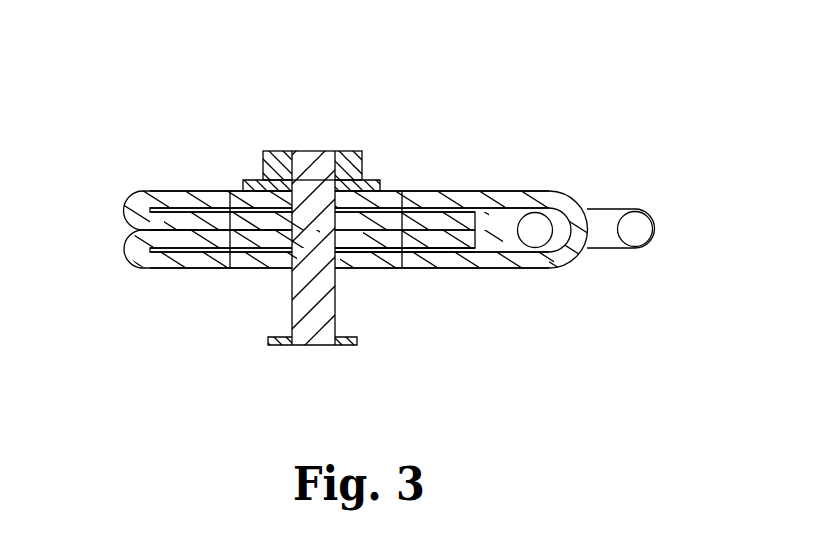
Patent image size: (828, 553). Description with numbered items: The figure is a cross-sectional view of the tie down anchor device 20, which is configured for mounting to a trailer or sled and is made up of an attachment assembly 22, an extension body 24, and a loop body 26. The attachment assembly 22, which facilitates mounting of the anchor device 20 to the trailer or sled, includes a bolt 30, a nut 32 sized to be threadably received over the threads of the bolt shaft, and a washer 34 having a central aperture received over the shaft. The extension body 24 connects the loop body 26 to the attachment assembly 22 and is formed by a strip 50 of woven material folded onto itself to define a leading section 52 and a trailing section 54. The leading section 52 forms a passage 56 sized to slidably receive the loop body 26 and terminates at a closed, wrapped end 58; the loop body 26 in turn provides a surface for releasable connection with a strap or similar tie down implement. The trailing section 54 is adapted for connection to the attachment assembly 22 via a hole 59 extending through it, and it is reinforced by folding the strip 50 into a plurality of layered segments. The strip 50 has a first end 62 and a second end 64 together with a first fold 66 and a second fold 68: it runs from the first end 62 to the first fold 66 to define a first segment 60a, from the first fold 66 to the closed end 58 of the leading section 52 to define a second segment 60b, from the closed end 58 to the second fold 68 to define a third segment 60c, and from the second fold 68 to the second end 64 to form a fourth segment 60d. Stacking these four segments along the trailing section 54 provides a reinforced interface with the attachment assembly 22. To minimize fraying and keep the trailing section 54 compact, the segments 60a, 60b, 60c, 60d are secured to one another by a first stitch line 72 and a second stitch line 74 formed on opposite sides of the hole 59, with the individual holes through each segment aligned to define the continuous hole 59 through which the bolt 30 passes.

The tie down anchor device 20 is at (357, 31).
The attachment assembly 22 is at (350, 133).
The extension body 24 is at (468, 178).
The loop body 26 is at (628, 192).
The bolt 30 is at (311, 320).
The nut 32 is at (273, 150).
The washer 34 is at (254, 190).
The strip 50 is at (503, 273).
The leading section 52 is at (541, 183).
The trailing section 54 is at (188, 184).
The passage 56 is at (520, 248).
The closed end 58 is at (550, 240).
The hole 59 is at (288, 258).
The first segment 60a is at (410, 212).
The second segment 60b is at (215, 193).
The third segment 60c is at (438, 262).
The fourth segment 60d is at (183, 243).
The first end 62 is at (490, 210).
The second end 64 is at (478, 250).
The first fold 66 is at (136, 205).
The second fold 68 is at (133, 252).
The first stitch line 72 is at (246, 250).
The second stitch line 74 is at (415, 245).